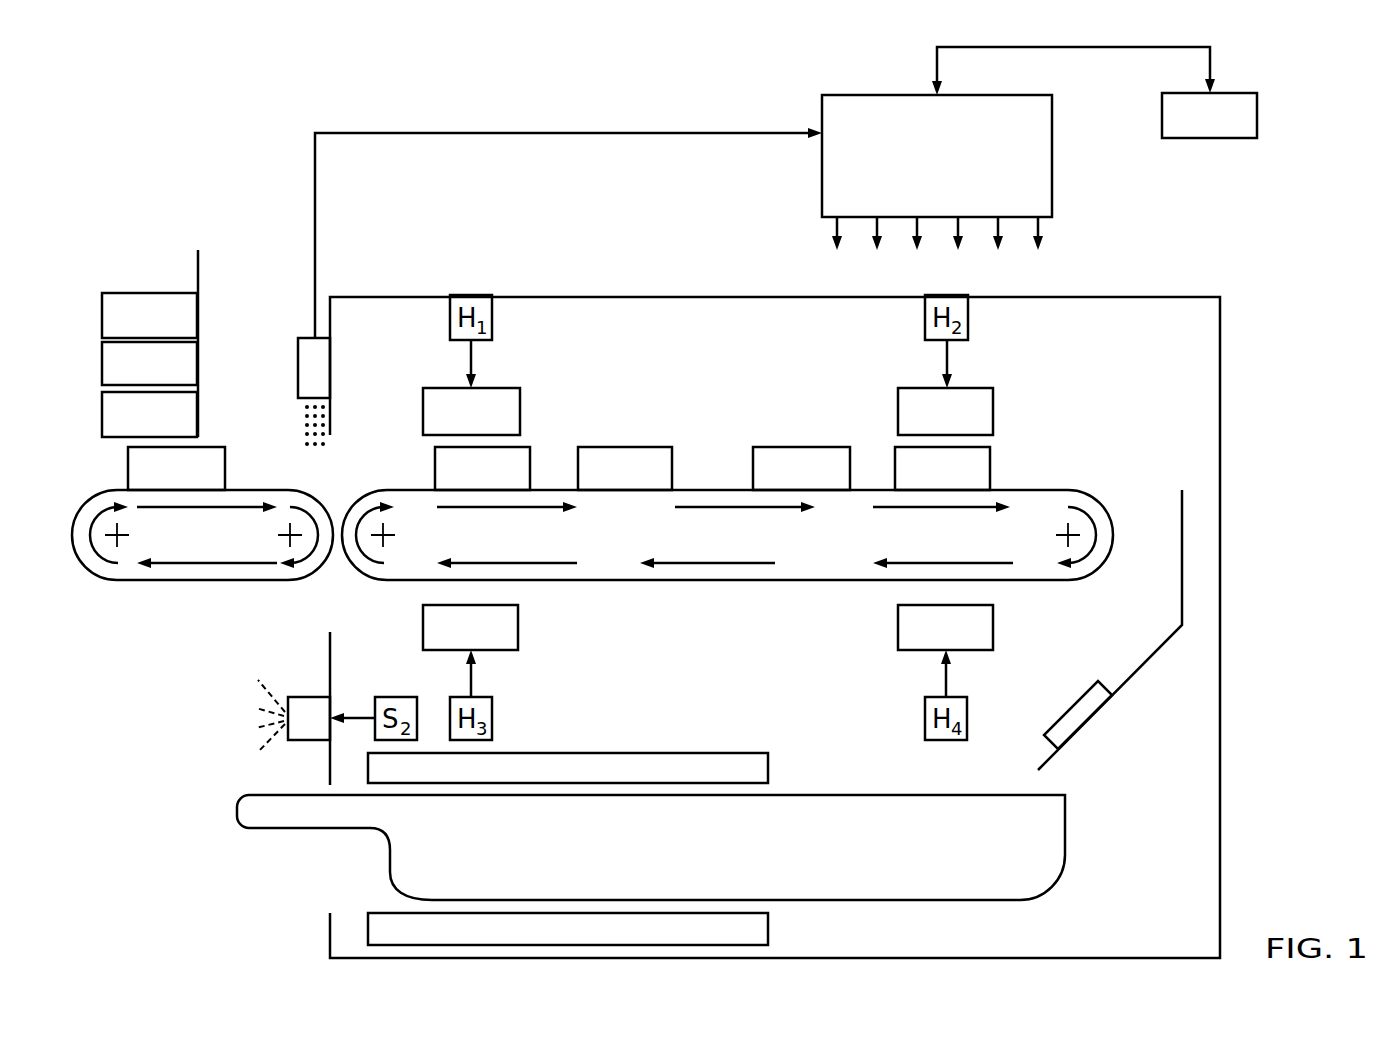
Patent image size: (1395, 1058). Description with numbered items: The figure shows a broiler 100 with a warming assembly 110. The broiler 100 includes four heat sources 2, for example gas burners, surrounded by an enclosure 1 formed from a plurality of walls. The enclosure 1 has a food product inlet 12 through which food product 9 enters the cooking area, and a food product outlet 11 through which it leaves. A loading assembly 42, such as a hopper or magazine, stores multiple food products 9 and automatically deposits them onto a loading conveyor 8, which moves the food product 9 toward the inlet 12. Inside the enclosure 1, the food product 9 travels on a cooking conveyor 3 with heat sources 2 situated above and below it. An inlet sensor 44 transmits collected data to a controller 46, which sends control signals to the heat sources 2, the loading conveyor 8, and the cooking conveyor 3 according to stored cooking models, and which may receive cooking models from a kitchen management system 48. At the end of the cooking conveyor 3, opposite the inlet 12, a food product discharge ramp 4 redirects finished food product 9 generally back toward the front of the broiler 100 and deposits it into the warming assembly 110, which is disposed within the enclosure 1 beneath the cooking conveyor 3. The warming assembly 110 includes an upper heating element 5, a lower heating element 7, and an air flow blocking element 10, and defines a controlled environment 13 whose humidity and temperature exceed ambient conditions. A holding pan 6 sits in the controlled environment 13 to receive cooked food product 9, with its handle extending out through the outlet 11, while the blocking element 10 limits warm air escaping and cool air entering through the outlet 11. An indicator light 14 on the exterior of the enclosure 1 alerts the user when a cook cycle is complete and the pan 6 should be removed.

The broiler 100 is at (196, 133).
The enclosure 1 is at (615, 297).
The heat source 2 is at (520, 412).
The cooking conveyor 3 is at (750, 580).
The food product discharge ramp 4 is at (1053, 753).
The upper heating element 5 is at (580, 770).
The holding pan 6 is at (1043, 843).
The lower heating element 7 is at (745, 935).
The loading conveyor 8 is at (118, 580).
The food product 9 is at (159, 330).
The air flow blocking element 10 is at (327, 767).
The food product outlet 11 is at (313, 895).
The food product inlet 12 is at (285, 452).
The controlled environment 13 is at (436, 792).
The indicator light 14 is at (287, 708).
The loading assembly 42 is at (198, 272).
The inlet sensor 44 is at (298, 338).
The controller 46 is at (875, 95).
The kitchen management system 48 is at (1257, 115).
The warming assembly 110 is at (300, 758).